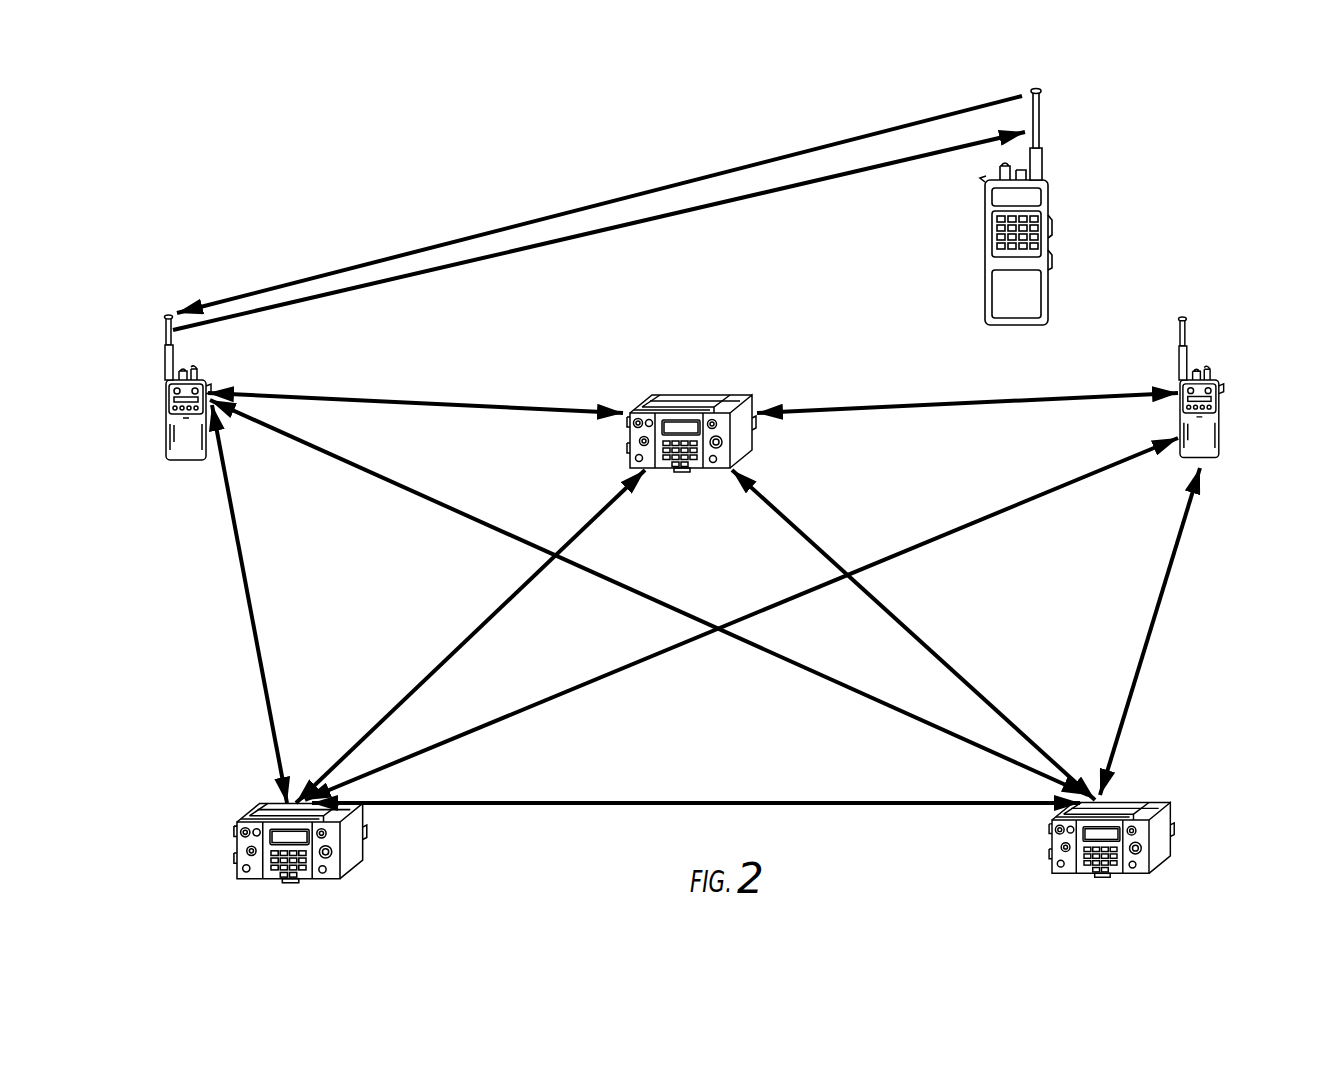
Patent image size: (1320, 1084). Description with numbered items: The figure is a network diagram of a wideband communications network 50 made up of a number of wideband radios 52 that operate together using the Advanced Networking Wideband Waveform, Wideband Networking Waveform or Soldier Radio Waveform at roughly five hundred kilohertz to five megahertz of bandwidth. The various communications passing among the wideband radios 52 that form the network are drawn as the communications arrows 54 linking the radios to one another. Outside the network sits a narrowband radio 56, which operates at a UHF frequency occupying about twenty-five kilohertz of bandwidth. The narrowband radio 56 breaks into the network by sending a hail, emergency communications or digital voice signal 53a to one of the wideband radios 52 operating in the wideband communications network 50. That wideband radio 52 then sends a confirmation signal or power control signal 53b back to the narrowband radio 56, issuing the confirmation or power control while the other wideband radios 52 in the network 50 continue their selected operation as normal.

The wideband communications network 50 is at (1205, 638).
The wideband radio 52 is at (189, 461).
The hail or emergency communications or digital voice signal 53a is at (429, 250).
The confirmation signal or power control signal 53b is at (498, 258).
The communications arrows 54 is at (1011, 512).
The narrowband radio 56 is at (1048, 198).